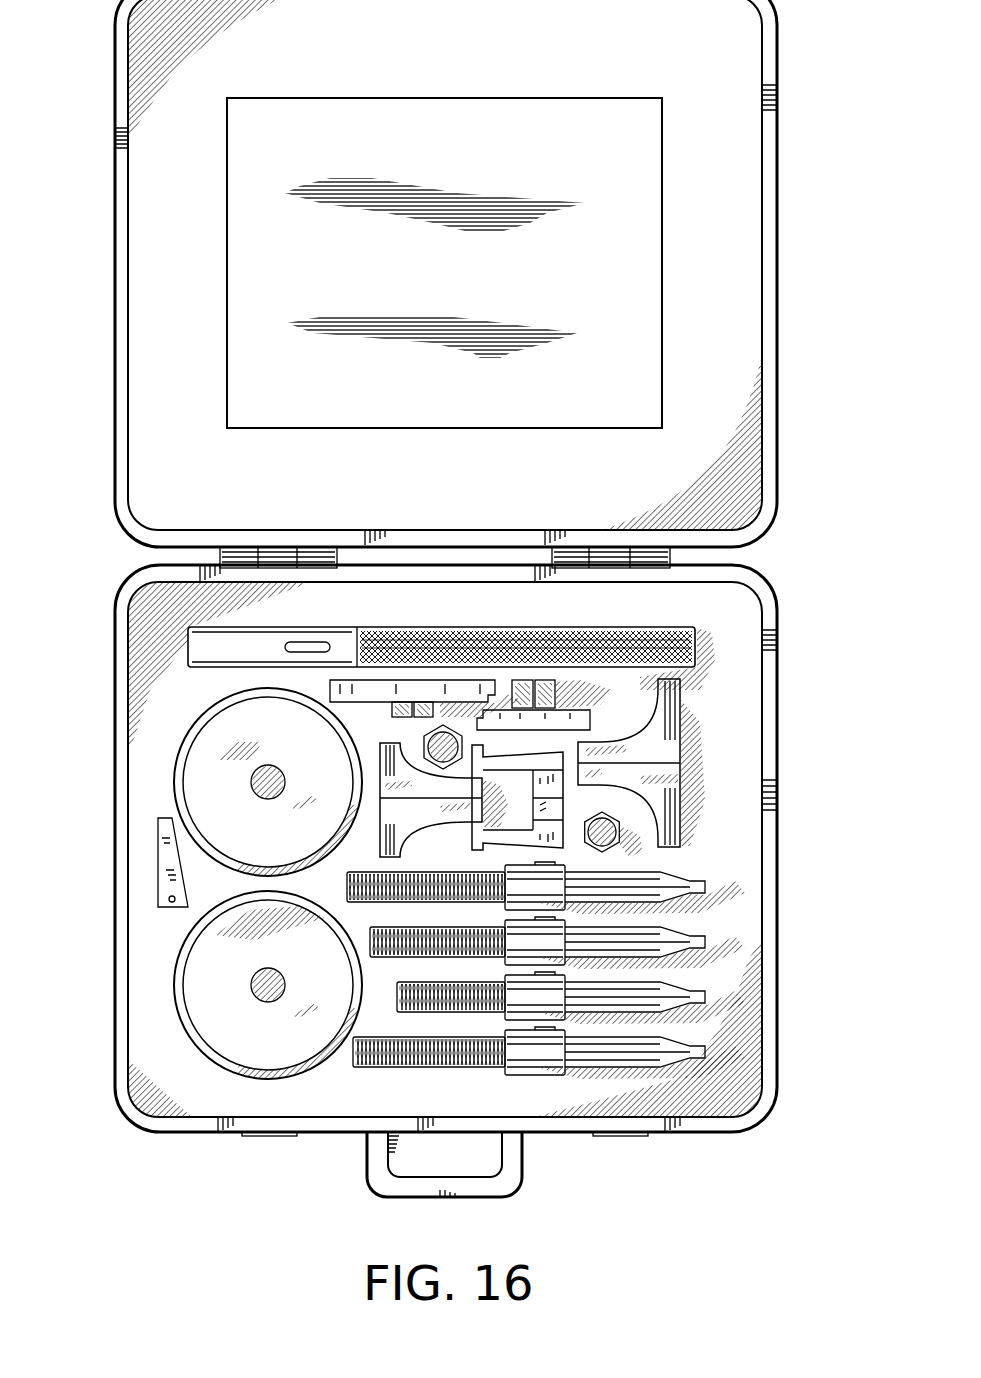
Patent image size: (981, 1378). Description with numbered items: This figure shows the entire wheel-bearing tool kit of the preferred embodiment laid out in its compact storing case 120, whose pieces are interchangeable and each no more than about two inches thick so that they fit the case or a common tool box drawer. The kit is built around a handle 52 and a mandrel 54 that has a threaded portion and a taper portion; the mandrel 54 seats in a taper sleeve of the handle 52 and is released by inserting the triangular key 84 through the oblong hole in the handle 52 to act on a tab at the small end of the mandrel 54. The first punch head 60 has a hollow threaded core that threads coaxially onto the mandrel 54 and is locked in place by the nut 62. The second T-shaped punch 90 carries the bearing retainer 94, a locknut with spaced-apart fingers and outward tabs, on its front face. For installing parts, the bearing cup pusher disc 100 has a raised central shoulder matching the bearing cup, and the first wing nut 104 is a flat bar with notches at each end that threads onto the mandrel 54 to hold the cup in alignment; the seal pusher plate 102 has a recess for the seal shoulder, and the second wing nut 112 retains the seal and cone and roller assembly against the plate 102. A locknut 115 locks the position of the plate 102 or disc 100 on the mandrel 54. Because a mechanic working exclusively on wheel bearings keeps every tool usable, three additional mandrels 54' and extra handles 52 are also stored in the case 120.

The handle 52 is at (695, 643).
The mandrel 54 is at (591, 898).
The additional mandrels 54' is at (598, 998).
The first punch head 60 is at (680, 763).
The nut 62 is at (687, 822).
The triangular key 84 is at (165, 873).
The second T-shaped punch 90 is at (380, 812).
The bearing retainer 94 is at (620, 851).
The bearing cup pusher disc 100 is at (200, 778).
The seal pusher plate 102 is at (195, 992).
The first wing nut 104 is at (370, 701).
The second wing nut 112 is at (562, 692).
The locknut 115 is at (590, 721).
The storing case 120 is at (700, 1132).